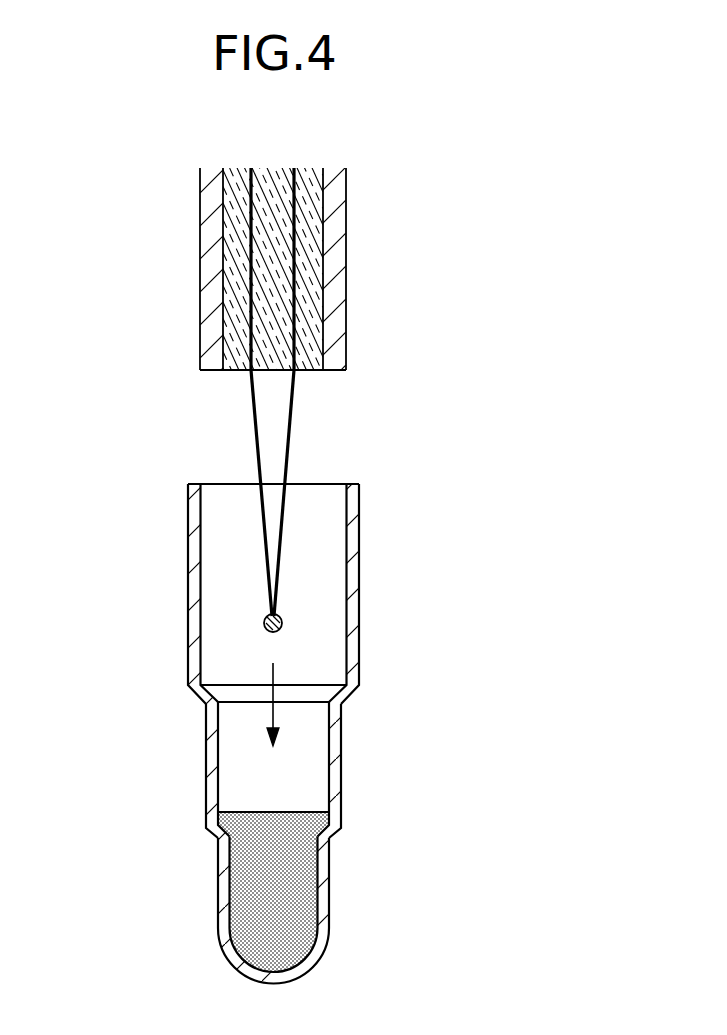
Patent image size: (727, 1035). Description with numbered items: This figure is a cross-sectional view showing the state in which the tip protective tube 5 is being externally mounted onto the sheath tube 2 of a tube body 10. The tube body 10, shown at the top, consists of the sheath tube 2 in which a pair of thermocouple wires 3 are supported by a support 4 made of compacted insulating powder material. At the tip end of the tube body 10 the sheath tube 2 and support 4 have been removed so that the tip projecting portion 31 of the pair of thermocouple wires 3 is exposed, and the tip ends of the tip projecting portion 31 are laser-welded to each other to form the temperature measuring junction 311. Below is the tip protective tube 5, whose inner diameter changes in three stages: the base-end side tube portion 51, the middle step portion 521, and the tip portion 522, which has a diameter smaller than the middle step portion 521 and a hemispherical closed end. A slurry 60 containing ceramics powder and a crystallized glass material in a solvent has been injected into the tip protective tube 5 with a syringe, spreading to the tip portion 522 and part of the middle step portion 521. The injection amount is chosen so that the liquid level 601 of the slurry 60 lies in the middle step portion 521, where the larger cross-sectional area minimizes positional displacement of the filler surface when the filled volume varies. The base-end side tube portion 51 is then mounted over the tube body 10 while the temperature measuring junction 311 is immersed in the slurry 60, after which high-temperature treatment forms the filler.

The tube body 10 is at (283, 294).
The sheath tube 2 is at (213, 231).
The pair of thermocouple wires 3 is at (247, 285).
The support 4 is at (283, 233).
The tip projecting portion 31 is at (293, 439).
The temperature measuring junction 311 is at (282, 620).
The tip protective tube 5 is at (284, 727).
The base-end side tube portion 51 is at (195, 607).
The middle step portion 521 is at (335, 747).
The tip portion 522 is at (222, 902).
The slurry 60 is at (281, 825).
The liquid level 601 is at (203, 745).